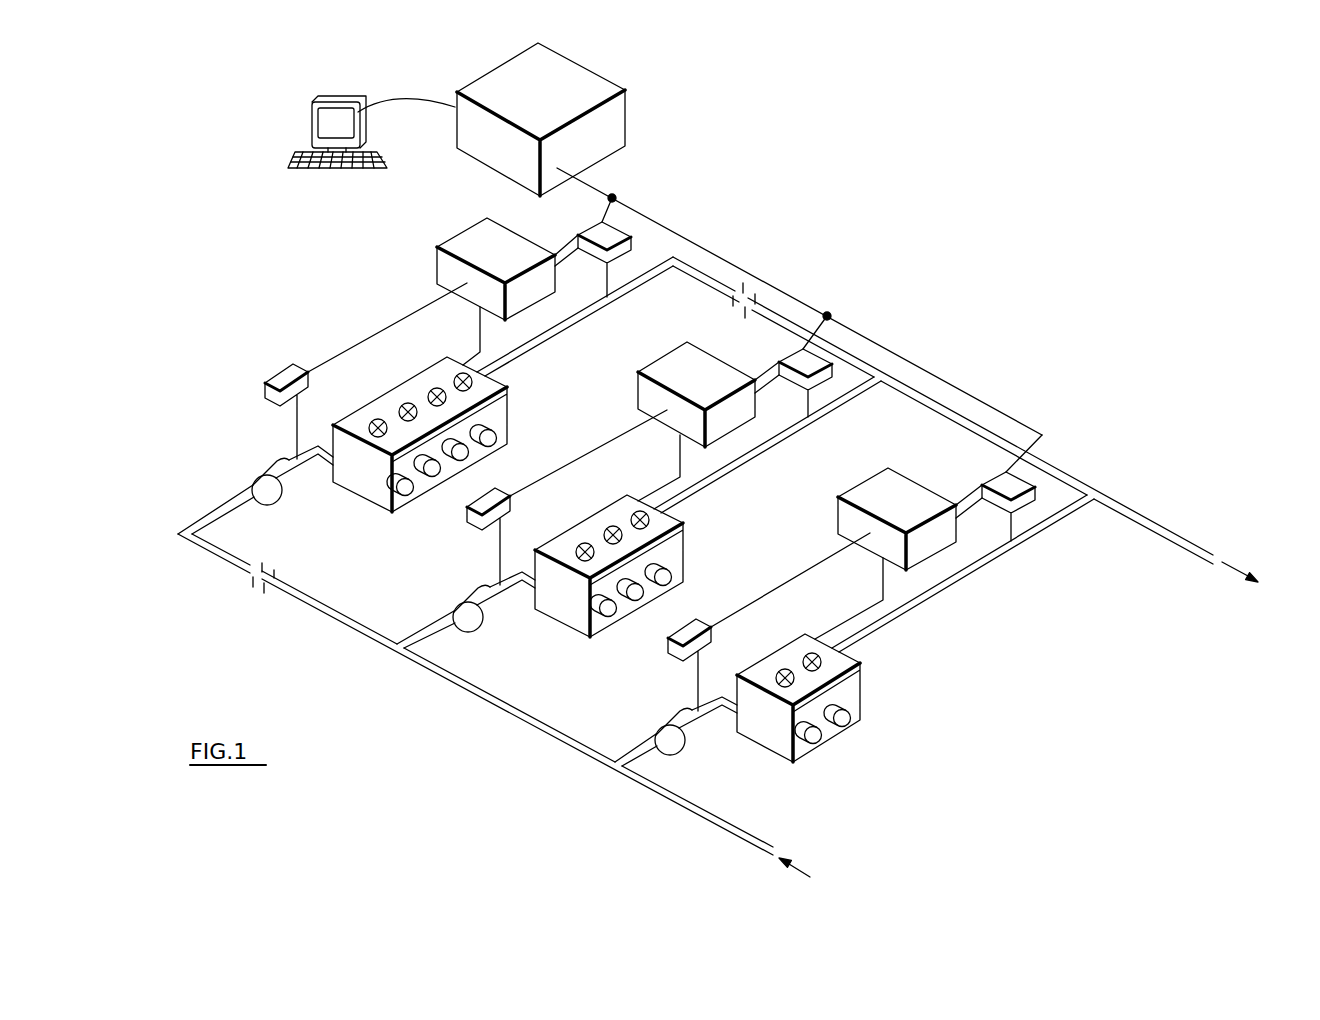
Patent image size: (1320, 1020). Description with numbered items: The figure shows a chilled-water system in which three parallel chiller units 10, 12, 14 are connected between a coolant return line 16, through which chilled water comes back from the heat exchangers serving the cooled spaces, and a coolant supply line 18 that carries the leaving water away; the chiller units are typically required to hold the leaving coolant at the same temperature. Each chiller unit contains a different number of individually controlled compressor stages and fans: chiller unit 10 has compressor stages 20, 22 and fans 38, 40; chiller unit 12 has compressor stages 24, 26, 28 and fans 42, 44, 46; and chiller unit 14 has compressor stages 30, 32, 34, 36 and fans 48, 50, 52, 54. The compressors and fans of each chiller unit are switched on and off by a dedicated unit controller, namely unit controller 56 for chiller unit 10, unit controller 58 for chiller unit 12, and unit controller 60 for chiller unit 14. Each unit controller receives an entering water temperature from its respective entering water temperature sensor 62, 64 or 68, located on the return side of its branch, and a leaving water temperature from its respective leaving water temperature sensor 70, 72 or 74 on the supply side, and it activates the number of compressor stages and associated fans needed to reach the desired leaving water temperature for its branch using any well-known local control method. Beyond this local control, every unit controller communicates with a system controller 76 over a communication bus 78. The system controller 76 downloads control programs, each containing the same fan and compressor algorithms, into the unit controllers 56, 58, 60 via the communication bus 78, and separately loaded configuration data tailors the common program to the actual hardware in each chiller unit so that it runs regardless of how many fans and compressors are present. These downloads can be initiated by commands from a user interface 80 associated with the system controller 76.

The chiller unit 10 is at (816, 694).
The chiller unit 12 is at (628, 561).
The chiller unit 14 is at (435, 444).
The coolant return line 16 is at (683, 810).
The coolant supply line 18 is at (1162, 520).
The compressor stage 20 is at (826, 740).
The compressor stage 22 is at (855, 722).
The compressor stage 24 is at (619, 613).
The compressor stage 26 is at (648, 596).
The compressor stage 28 is at (676, 581).
The compressor stage 30 is at (404, 498).
The compressor stage 32 is at (435, 478).
The compressor stage 34 is at (472, 458).
The compressor stage 36 is at (498, 443).
The fan 38 is at (776, 672).
The fan 40 is at (804, 656).
The fan 42 is at (577, 546).
The fan 44 is at (605, 529).
The fan 46 is at (632, 514).
The fan 48 is at (371, 422).
The fan 50 is at (401, 405).
The fan 52 is at (430, 390).
The fan 54 is at (456, 375).
The unit controller 56 is at (838, 505).
The unit controller 58 is at (638, 380).
The unit controller 60 is at (437, 248).
The entering water temperature sensor 62 is at (669, 647).
The entering water temperature sensor 64 is at (470, 528).
The entering water temperature sensor 68 is at (285, 376).
The leaving water temperature sensor 70 is at (984, 478).
The leaving water temperature sensor 72 is at (800, 349).
The leaving water temperature sensor 74 is at (621, 232).
The system controller 76 is at (627, 124).
The communication bus 78 is at (960, 388).
The user interface 80 is at (361, 118).